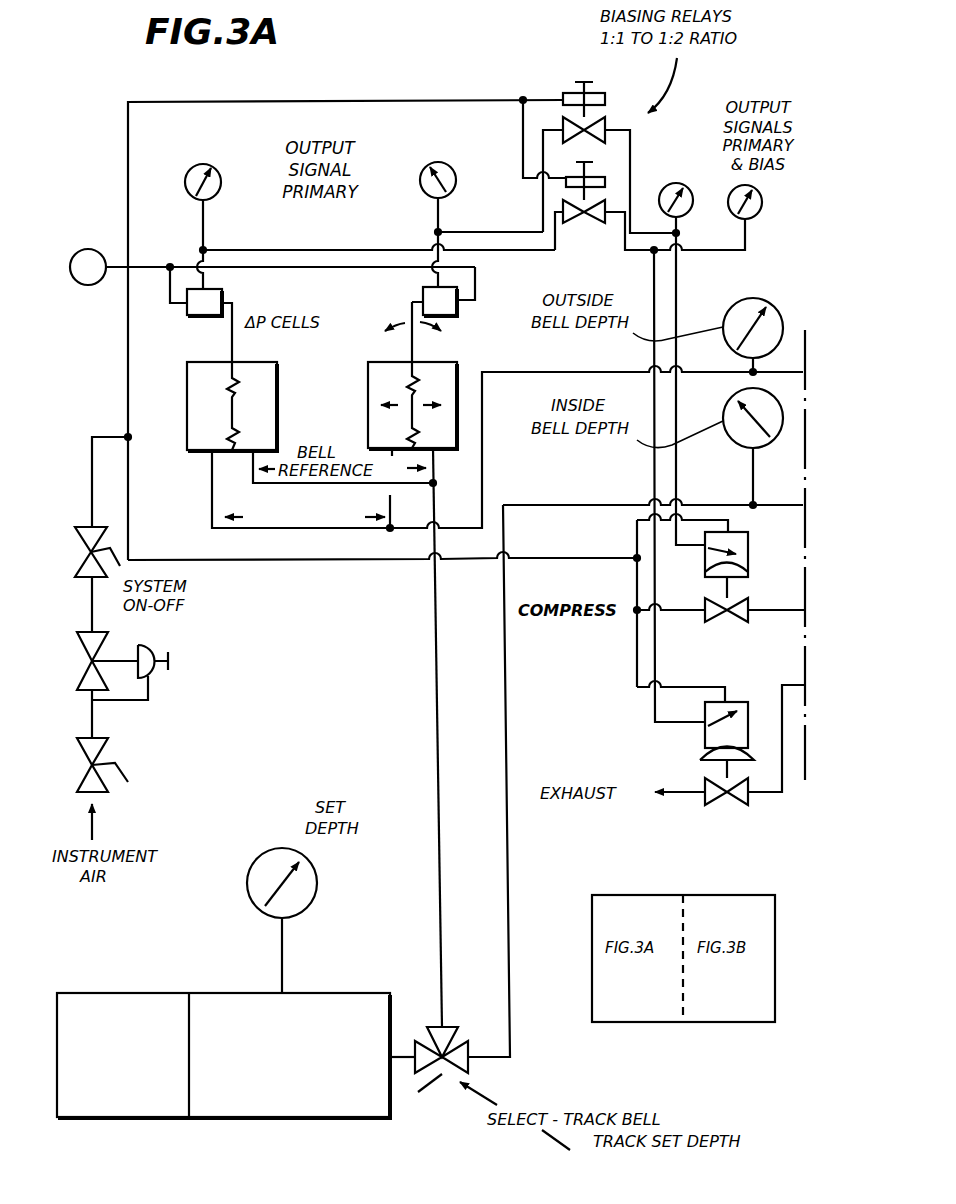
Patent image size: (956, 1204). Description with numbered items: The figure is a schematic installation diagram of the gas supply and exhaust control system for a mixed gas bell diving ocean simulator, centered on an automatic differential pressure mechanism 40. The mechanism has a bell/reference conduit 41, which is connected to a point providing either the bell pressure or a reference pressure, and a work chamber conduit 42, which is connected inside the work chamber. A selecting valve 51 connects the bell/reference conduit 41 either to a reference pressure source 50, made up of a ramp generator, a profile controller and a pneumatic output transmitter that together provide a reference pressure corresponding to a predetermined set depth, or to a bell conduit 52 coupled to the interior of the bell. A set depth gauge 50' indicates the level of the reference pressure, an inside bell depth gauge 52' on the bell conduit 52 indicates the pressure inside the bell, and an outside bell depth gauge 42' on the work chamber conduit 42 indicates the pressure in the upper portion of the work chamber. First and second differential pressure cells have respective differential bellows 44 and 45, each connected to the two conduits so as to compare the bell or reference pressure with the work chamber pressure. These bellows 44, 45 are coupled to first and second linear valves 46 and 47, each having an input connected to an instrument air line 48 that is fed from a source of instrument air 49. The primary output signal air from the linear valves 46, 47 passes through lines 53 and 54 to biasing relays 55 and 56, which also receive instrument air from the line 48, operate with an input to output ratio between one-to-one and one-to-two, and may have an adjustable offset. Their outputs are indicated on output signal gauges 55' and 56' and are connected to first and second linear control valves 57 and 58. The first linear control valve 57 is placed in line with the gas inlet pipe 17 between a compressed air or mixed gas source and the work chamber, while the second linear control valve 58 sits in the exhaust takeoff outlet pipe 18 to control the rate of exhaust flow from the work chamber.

The instrument air line 48 is at (403, 101).
The biasing relay 55 is at (609, 148).
The biasing relay 56 is at (650, 212).
The line 53 is at (495, 232).
The line 54 is at (520, 250).
The output signal gauge 55' is at (669, 205).
The output signal gauge 56' is at (765, 203).
The second linear valve 47 is at (190, 317).
The first linear valve 46 is at (447, 317).
The differential bellows 45 is at (187, 417).
The differential bellows 44 is at (368, 388).
The work chamber conduit 42 is at (490, 440).
The bell/reference conduit 41 is at (435, 500).
The bell conduit 52 is at (635, 778).
The outside bell depth gauge 42' is at (708, 327).
The inside bell depth gauge 52' is at (710, 444).
The automatic differential pressure mechanism 40 is at (323, 604).
The first linear control valve 57 is at (772, 562).
The gas inlet pipe 17 is at (791, 609).
The second linear control valve 58 is at (744, 708).
The exhaust takeoff outlet pipe 18 is at (782, 766).
The source of instrument air 49 is at (103, 760).
The set depth gauge 50' is at (304, 920).
The reference pressure source 50 is at (236, 1043).
The selecting valve 51 is at (477, 1022).